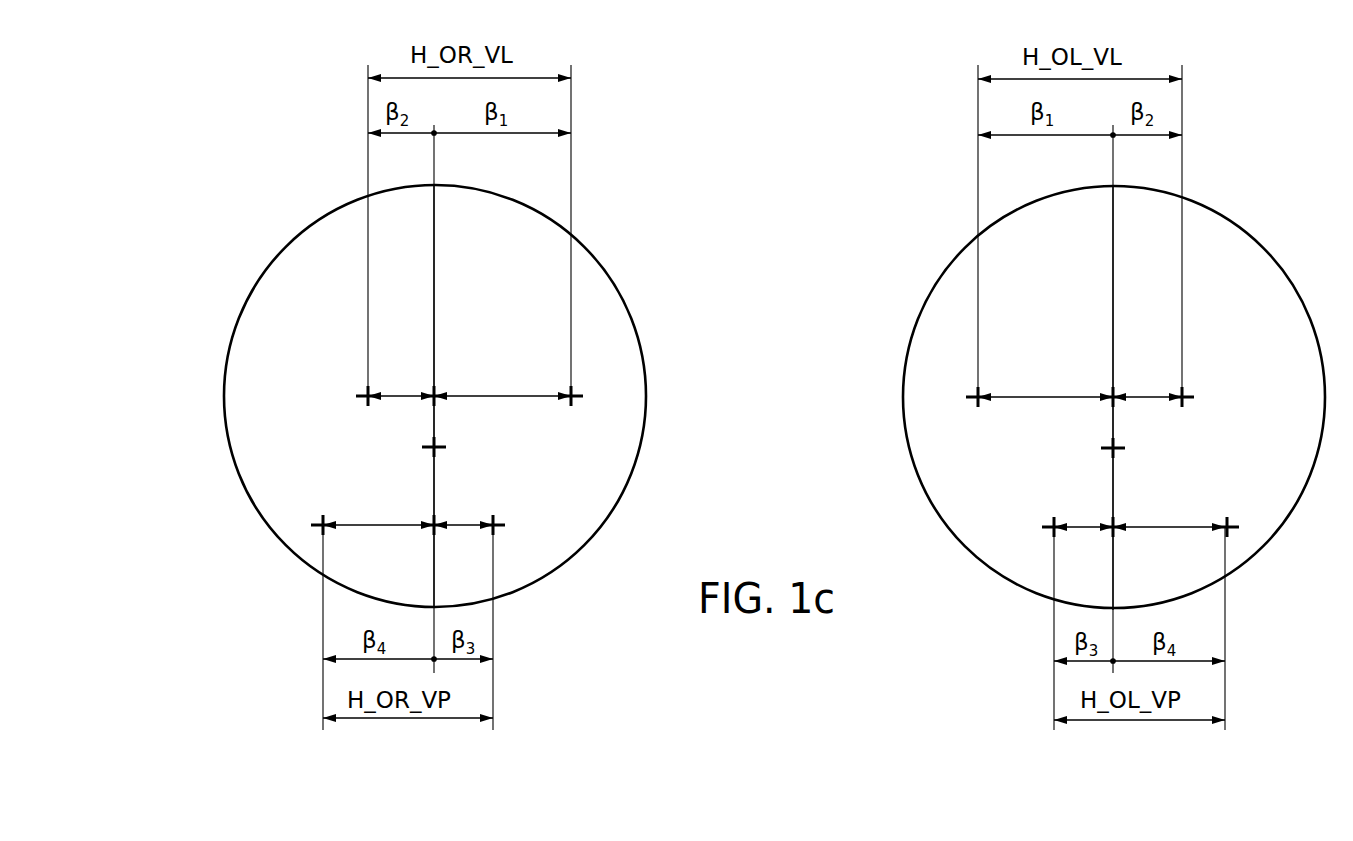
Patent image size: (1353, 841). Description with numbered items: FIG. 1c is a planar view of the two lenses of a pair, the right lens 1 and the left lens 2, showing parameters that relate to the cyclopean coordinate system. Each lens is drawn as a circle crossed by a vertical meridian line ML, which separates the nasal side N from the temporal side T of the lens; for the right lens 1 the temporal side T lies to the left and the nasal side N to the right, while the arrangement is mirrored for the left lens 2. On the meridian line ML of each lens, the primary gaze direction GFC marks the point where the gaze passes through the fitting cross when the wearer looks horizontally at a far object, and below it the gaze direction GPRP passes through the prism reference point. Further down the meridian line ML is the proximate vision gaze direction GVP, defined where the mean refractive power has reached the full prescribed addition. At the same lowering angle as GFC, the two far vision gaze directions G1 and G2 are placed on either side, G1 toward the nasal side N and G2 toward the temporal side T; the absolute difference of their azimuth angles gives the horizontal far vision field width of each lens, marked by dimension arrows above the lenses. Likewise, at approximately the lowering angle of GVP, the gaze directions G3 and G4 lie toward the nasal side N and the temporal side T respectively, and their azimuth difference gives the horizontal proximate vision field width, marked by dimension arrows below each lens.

The right lens 1 is at (520, 203).
The left lens 2 is at (1220, 215).
The meridian line ML is at (434, 268).
The primary gaze direction GFC is at (432, 395).
The prism reference point gaze direction GPRP is at (437, 447).
The proximate vision gaze direction GVP is at (432, 524).
The first far vision gaze direction G1 is at (577, 394).
The second far vision gaze direction G2 is at (364, 400).
The first proximate vision gaze direction G3 is at (495, 520).
The second proximate vision gaze direction G4 is at (322, 520).
The temporal side T is at (266, 452).
The nasal side N is at (628, 452).